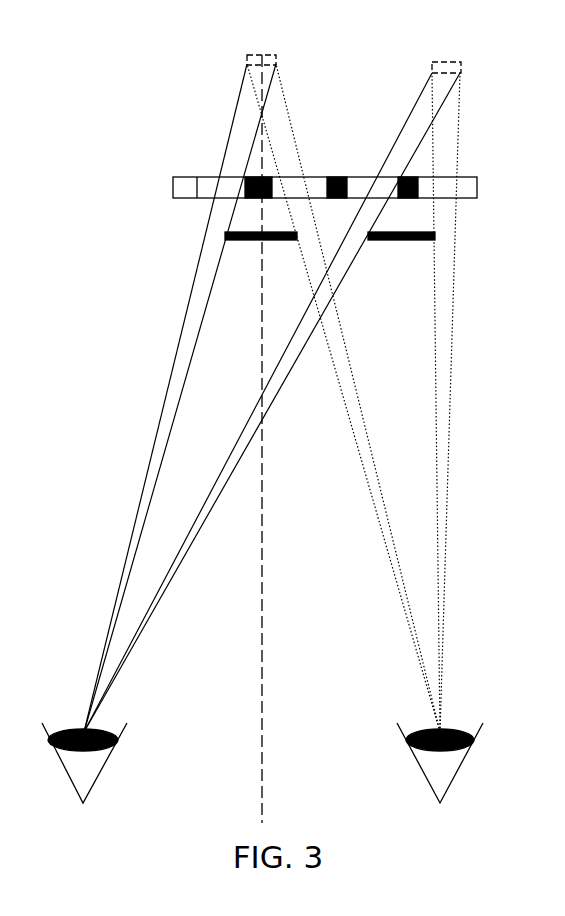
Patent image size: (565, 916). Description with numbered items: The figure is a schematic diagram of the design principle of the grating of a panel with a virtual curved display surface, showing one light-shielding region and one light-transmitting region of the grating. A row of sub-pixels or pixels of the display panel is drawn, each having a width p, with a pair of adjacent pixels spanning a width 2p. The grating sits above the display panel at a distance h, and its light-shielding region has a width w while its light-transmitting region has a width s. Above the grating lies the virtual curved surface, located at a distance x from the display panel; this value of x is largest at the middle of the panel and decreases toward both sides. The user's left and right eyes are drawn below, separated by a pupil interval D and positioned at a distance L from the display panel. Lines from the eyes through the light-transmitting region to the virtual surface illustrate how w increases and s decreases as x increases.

The distance between virtual curved surface and display panel x is at (247, 57).
The distance between grating and display panel h is at (225, 237).
The two sub-pixel or pixel widths 2p is at (398, 177).
The width of a sub-pixel or pixel p is at (477, 198).
The width of the light-shielding region w is at (297, 240).
The width of the light-transmitting region s is at (368, 240).
The distance from eyes to display panel L is at (517, 188).
The interval between pupils D is at (440, 803).